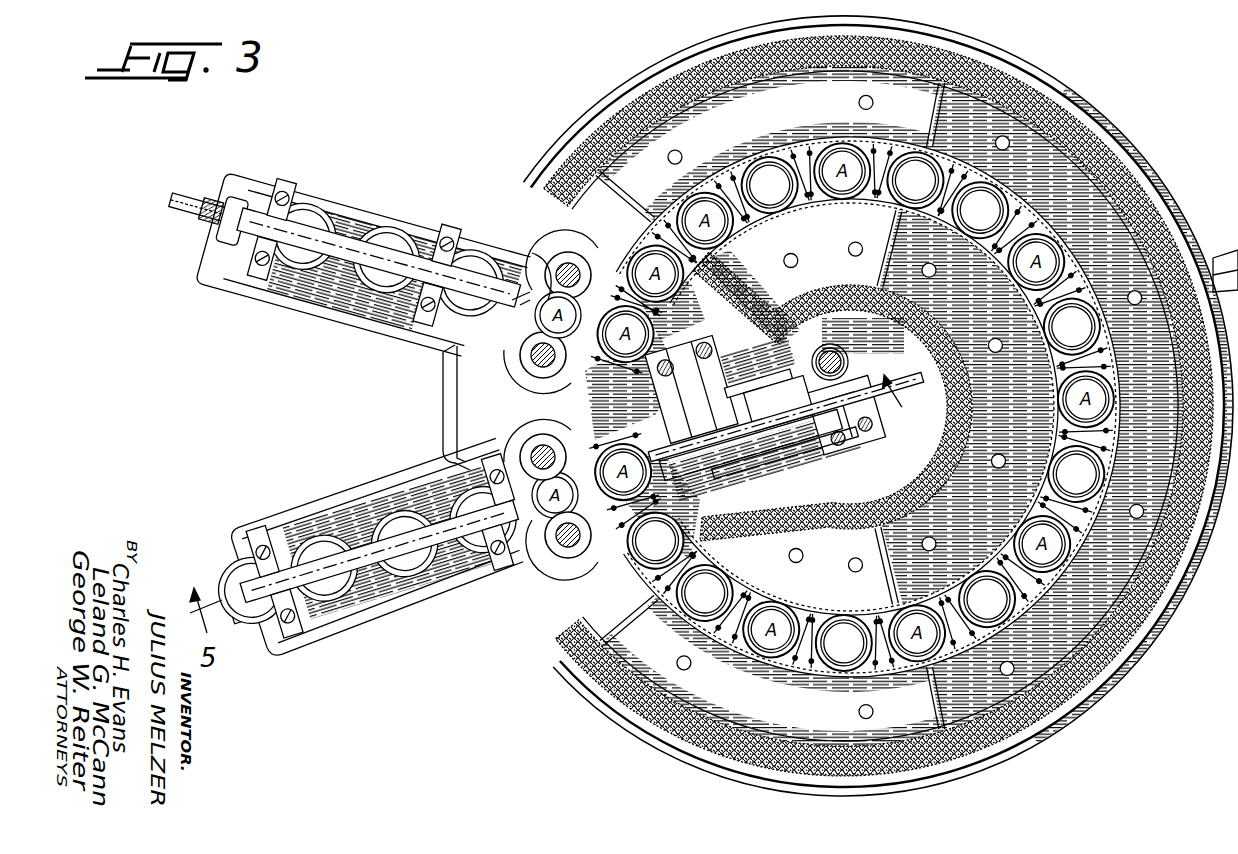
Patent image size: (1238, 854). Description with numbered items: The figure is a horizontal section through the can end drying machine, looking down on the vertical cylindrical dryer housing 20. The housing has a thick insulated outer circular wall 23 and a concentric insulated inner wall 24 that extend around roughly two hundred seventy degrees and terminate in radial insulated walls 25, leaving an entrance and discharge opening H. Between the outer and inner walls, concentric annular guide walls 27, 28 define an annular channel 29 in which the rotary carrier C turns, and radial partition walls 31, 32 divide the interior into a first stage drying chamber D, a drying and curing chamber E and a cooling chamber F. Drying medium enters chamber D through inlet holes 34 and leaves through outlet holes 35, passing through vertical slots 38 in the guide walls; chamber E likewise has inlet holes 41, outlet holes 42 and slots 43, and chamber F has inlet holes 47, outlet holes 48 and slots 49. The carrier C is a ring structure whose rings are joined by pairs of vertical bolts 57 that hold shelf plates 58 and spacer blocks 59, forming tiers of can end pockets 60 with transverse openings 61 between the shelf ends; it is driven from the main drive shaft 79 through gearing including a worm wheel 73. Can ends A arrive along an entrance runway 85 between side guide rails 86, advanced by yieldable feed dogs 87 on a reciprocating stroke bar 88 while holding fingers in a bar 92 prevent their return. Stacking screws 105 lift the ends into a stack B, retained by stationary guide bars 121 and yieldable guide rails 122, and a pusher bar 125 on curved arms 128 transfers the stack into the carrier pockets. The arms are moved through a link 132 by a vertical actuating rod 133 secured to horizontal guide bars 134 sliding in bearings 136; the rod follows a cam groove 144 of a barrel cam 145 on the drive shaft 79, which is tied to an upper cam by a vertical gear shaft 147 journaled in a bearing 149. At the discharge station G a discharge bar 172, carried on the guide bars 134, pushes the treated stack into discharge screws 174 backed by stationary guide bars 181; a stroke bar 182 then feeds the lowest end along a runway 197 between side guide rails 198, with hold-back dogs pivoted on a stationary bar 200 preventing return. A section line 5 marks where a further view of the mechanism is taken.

The section line 5 is at (791, 434).
The dryer housing 20 is at (1128, 682).
The outer circular wall 23 is at (1058, 718).
The inner concentric circular wall 24 is at (945, 511).
The radially disposed insulated walls 25 is at (630, 192).
The annular guide wall 27 is at (915, 672).
The annular guide wall 28 is at (872, 568).
The annular channel 29 is at (815, 665).
The radial partition wall 31 is at (942, 104).
The radial partition wall 32 is at (882, 555).
The inlet holes 34 is at (850, 253).
The outlet holes 35 is at (683, 152).
The vertical slots 38 is at (777, 146).
The inlet holes 41 is at (936, 274).
The outlet holes 42 is at (1010, 146).
The vertical slots 43 is at (1070, 260).
The inlet holes 47 is at (803, 557).
The outlet holes 48 is at (685, 670).
The vertical slots 49 is at (805, 596).
The vertical bolts 57 is at (996, 208).
The shelf plates 58 is at (786, 181).
The spacer blocks 59 is at (928, 176).
The can end pockets 60 is at (862, 150).
The transverse openings 61 is at (925, 150).
The worm wheel 73 is at (668, 538).
The main drive shaft 79 is at (1220, 262).
The entrance runway 85 is at (344, 244).
The side guide rails 86 is at (292, 186).
The feed dogs 87 is at (210, 232).
The stroke bar 88 is at (172, 228).
The bar 92 is at (360, 262).
The stacking screws 105 is at (566, 252).
The stationary vertical guide bars 121 is at (520, 262).
The yieldable vertical guide rails 122 is at (585, 264).
The pusher bar 125 is at (506, 238).
The curved arms 128 is at (542, 248).
The link 132 is at (762, 382).
The vertical actuating rod 133 is at (774, 405).
The guide bars 134 is at (750, 444).
The bearings 136 is at (777, 426).
The cam groove 144 is at (857, 474).
The barrel cam 145 is at (840, 456).
The gear shaft 147 is at (838, 358).
The bearing 149 is at (845, 365).
The discharge bar 172 is at (680, 382).
The discharge screws 174 is at (525, 452).
The outer stationary vertical guide bars 181 is at (492, 533).
The stroke bar 182 is at (234, 620).
The runway 197 is at (366, 540).
The side guide rails 198 is at (280, 545).
The stationary bar 200 is at (458, 590).
The can ends A is at (386, 255).
The stack B is at (440, 348).
The rotary carrier C is at (560, 405).
The first stage drying chamber D is at (715, 105).
The drying and curing chamber E is at (1095, 208).
The cooling chamber F is at (695, 715).
The discharge station G is at (515, 610).
The entrance and discharge opening H is at (452, 411).